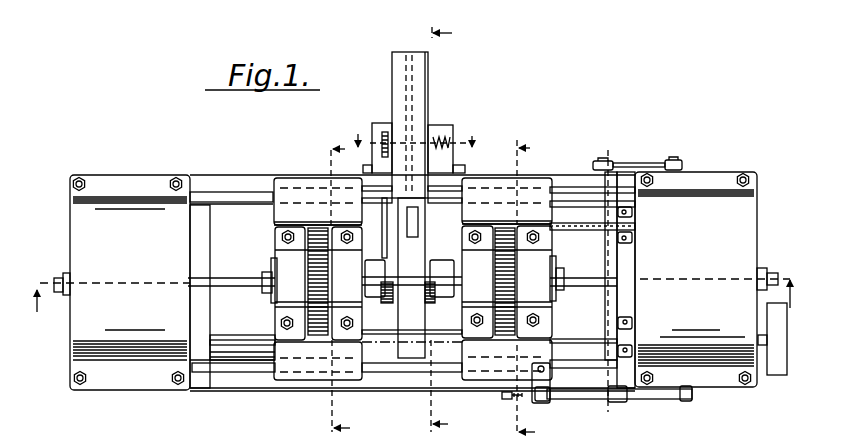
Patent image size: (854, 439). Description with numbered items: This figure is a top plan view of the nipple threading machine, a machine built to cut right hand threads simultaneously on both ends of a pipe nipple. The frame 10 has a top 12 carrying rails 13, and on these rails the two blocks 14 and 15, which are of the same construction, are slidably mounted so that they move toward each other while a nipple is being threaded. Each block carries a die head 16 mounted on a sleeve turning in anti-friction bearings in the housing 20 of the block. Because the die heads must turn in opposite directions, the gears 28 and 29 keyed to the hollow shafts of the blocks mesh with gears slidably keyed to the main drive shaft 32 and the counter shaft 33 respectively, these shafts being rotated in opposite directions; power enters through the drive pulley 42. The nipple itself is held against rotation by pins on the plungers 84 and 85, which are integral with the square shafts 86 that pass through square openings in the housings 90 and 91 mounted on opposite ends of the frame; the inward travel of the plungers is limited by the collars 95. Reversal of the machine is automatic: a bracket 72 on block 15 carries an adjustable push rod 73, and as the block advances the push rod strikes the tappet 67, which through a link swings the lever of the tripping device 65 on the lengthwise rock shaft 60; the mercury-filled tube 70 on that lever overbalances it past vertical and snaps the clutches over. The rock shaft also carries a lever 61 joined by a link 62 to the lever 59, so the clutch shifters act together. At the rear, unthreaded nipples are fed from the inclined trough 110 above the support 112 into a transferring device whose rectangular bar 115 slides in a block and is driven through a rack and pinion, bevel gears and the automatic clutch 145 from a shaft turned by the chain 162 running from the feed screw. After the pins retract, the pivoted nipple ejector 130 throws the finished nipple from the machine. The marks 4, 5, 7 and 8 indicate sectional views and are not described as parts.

The section line 4- 4 is at (414, 282).
The section line 5- 5 is at (522, 278).
The section line 7- 7 is at (438, 220).
The section line 8- 8 is at (414, 145).
The frame 10 is at (196, 391).
The top 12 is at (222, 177).
The rails 13 is at (223, 195).
The block 14 is at (289, 214).
The block 15 is at (523, 212).
The die heads 16 is at (377, 270).
The housing 20 is at (276, 297).
The gear 28 is at (283, 326).
The gear 29 is at (503, 307).
The main drive shaft 32 is at (602, 231).
The counter shaft 33 is at (583, 339).
The drive pulley 42 is at (775, 373).
The lever 59 is at (680, 162).
The rock shaft 60 is at (605, 303).
The lever 61 is at (611, 155).
The link 62 is at (641, 163).
The tripping device 65 is at (615, 404).
The tappet 67 is at (502, 396).
The tube 70 is at (672, 399).
The bracket 72 is at (540, 403).
The push rod 73 is at (522, 398).
The plunger 84 is at (267, 276).
The plunger 85 is at (560, 274).
The square shafts 86 is at (650, 267).
The housing 90 is at (113, 218).
The housing 91 is at (682, 210).
The collars 95 is at (62, 276).
The trough 110 is at (422, 102).
The support 112 is at (382, 125).
The rectangular bar 115 is at (405, 74).
The nipple ejector 130 is at (414, 238).
The automatic clutch 145 is at (441, 132).
The chain 162 is at (383, 213).